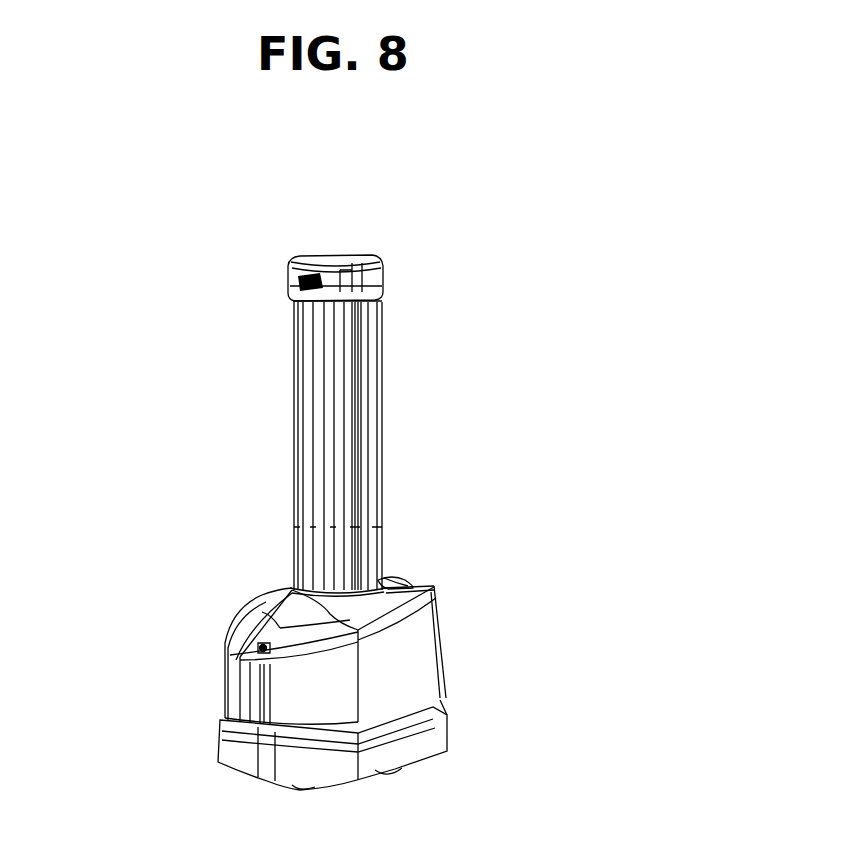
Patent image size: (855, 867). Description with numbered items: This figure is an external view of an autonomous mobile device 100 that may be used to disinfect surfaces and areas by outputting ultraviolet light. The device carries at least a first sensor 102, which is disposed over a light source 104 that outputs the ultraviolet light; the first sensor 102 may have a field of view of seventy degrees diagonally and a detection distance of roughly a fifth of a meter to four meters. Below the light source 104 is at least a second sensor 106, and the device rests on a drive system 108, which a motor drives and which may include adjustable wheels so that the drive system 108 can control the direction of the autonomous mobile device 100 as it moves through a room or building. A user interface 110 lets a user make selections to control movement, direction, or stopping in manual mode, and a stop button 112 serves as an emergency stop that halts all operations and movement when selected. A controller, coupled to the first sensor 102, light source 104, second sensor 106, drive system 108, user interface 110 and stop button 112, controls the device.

The autonomous mobile device 100 is at (467, 158).
The first sensor 102 is at (287, 283).
The light source 104 is at (294, 452).
The second sensor 106 is at (268, 619).
The drive system 108 is at (220, 755).
The user interface 110 is at (400, 576).
The stop button 112 is at (268, 647).